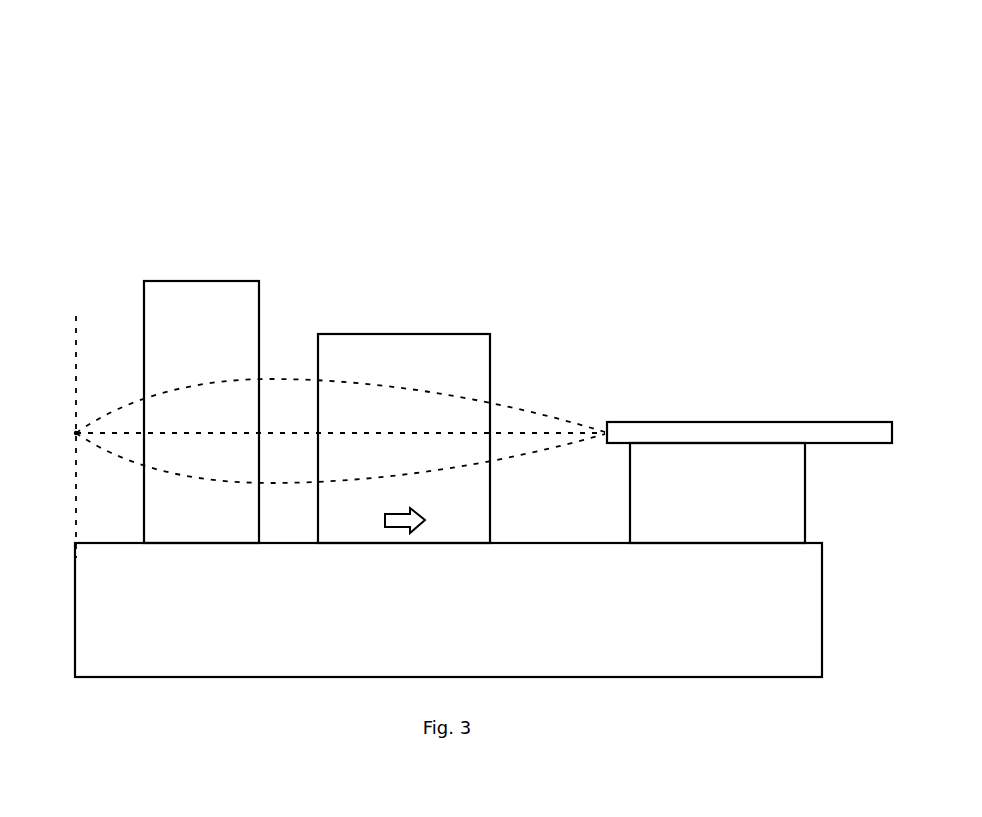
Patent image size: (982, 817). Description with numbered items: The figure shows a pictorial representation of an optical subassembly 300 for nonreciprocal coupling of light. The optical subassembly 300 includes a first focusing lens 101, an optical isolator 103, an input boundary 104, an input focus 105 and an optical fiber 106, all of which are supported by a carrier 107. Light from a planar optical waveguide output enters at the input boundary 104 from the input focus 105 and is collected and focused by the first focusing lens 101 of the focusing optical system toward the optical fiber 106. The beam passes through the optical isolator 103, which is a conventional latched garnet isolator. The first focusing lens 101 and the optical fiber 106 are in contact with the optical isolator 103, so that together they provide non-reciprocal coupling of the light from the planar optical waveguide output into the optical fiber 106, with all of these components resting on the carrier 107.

The optical subassembly 300 is at (380, 262).
The first focusing lens 101 is at (219, 268).
The optical isolator 103 is at (422, 326).
The input boundary 104 is at (75, 425).
The input focus 105 is at (316, 431).
The optical fiber 106 is at (776, 412).
The carrier 107 is at (448, 610).